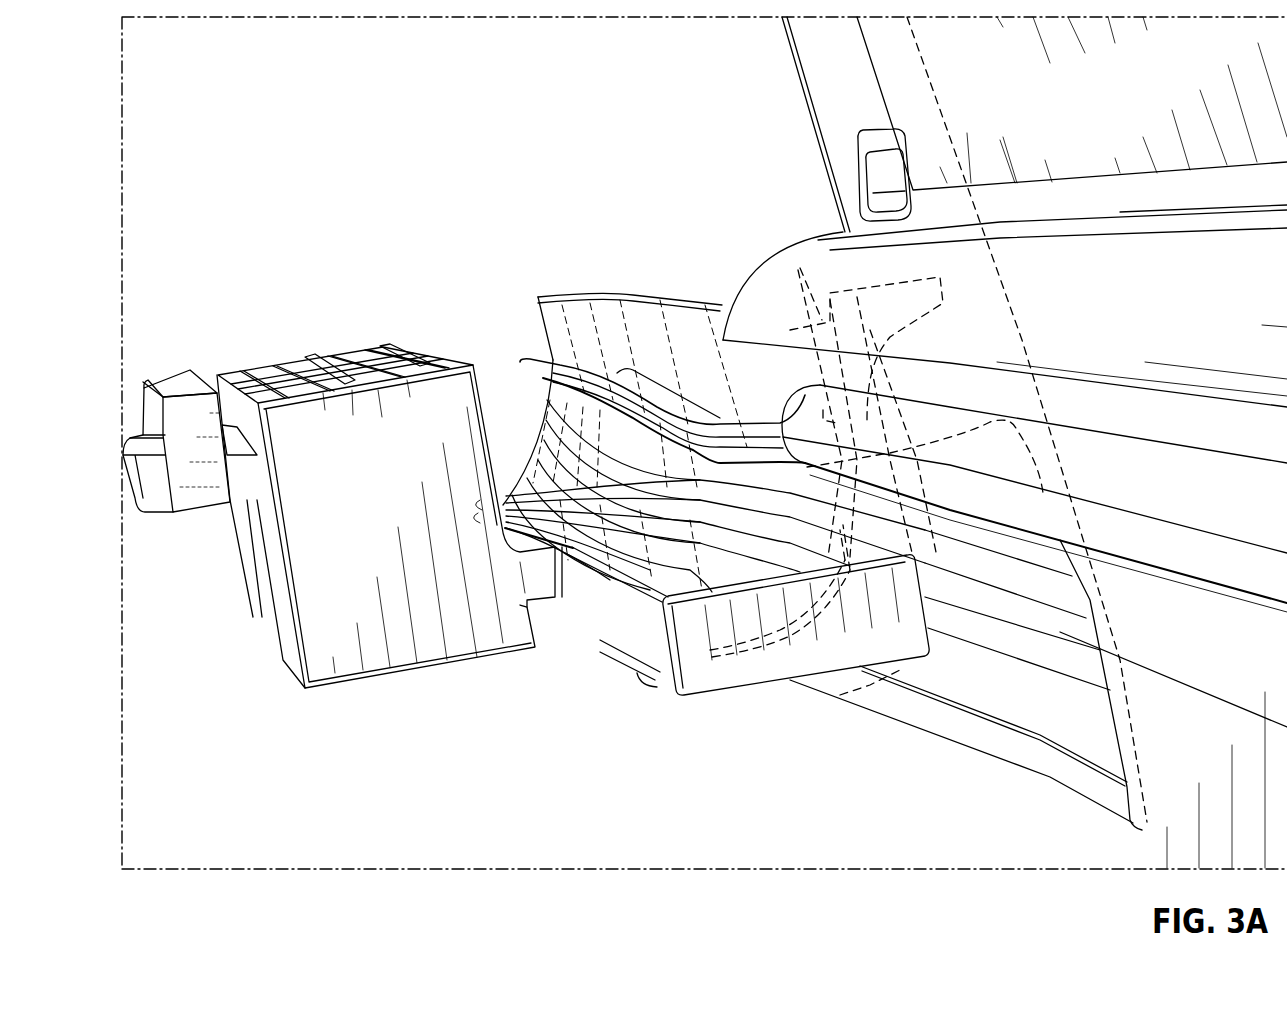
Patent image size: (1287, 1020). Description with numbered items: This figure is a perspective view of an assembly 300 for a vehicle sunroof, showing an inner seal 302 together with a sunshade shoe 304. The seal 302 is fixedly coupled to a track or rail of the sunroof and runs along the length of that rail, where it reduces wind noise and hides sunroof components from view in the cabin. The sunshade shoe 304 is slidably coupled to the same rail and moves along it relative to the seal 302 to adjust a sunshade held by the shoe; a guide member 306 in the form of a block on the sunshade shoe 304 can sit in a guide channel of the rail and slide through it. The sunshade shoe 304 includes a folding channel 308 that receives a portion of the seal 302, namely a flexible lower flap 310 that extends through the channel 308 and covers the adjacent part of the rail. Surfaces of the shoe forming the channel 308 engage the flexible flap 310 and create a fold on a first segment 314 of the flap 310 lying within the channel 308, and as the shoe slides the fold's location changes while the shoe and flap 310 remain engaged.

The assembly 300 is at (185, 100).
The seal 302 is at (818, 229).
The sunshade shoe 304 is at (298, 720).
The guide member 306 is at (284, 363).
The channel 308 is at (491, 364).
The flap 310 is at (1080, 718).
The first segment 314 is at (621, 281).